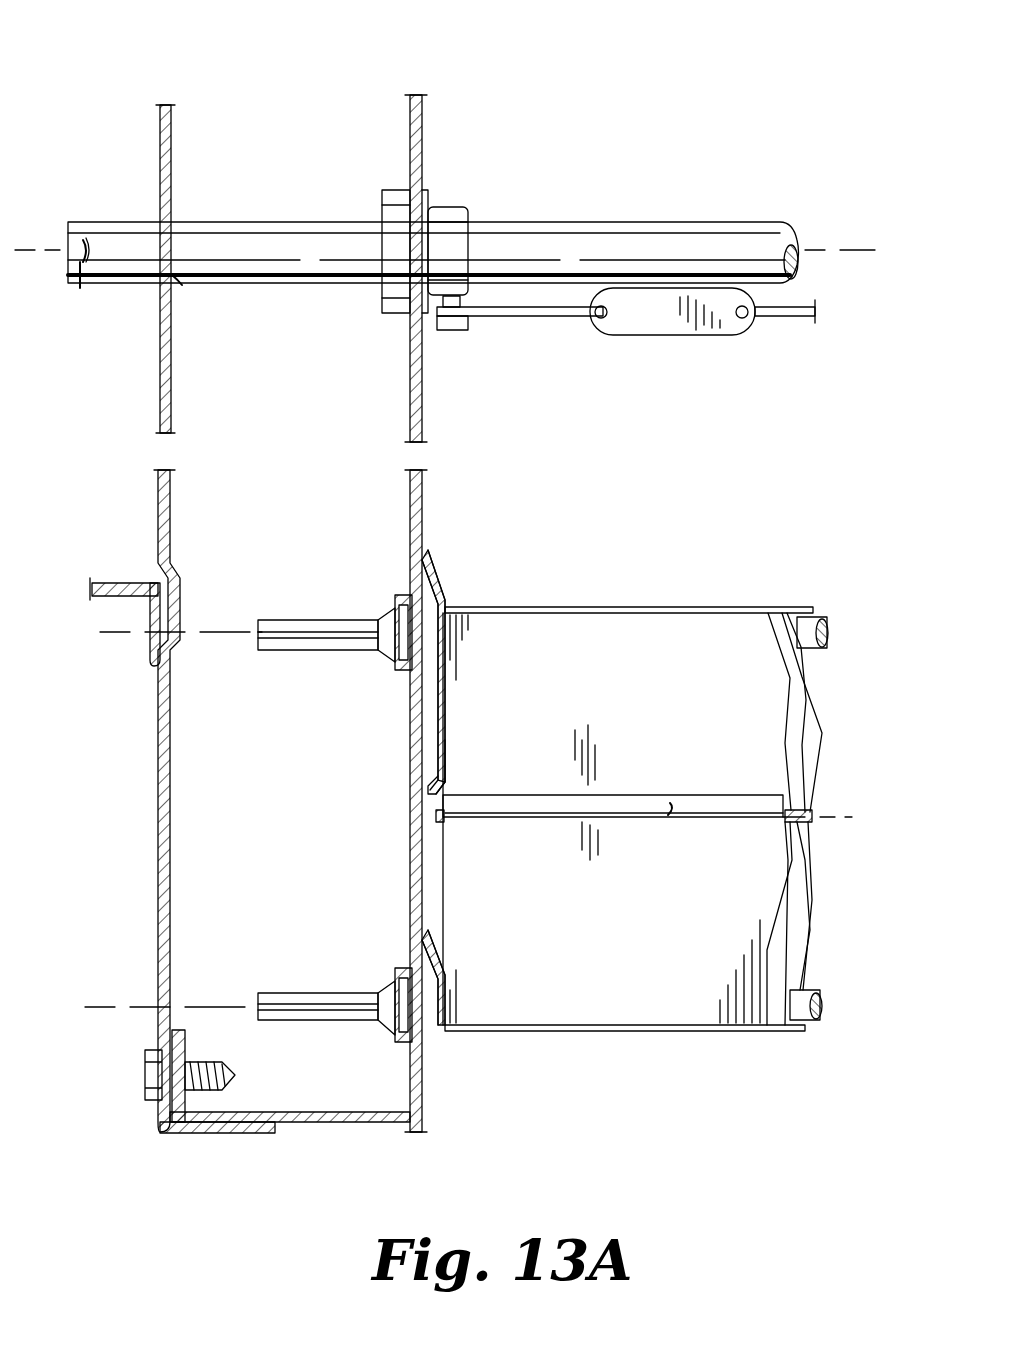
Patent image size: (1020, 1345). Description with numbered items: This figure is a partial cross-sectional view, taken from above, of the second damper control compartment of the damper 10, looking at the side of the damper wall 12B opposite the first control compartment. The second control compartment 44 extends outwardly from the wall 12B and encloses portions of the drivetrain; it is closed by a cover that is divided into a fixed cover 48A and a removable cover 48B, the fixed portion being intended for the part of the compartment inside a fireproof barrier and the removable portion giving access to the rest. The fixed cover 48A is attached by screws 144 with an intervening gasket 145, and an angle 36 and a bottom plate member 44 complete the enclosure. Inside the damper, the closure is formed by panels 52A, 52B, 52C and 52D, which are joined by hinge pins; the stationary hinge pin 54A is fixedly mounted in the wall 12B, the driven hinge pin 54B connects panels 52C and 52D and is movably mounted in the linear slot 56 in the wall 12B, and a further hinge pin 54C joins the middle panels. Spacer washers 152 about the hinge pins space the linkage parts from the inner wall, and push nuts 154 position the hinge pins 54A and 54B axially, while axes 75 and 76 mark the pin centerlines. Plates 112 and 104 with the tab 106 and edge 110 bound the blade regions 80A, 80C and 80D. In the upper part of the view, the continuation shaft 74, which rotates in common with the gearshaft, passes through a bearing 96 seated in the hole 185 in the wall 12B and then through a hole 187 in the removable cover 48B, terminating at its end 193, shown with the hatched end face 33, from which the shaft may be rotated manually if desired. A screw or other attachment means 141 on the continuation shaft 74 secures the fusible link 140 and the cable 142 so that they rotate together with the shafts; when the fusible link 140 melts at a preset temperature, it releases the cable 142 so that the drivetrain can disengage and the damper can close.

The damper 10 is at (285, 95).
The damper wall 12B is at (410, 397).
The hatched end 33 is at (803, 248).
The bracket 36 is at (118, 582).
The second control compartment 44 is at (344, 1112).
The fixed cover 48A is at (158, 720).
The removable cover 48B is at (158, 340).
The panel 52A is at (810, 680).
The panel 52B is at (793, 750).
The panel 52C is at (800, 920).
The panel 52D is at (780, 953).
The stationary hinge pin 54A is at (310, 620).
The driven hinge pin 54B is at (344, 993).
The hinge pin 54C is at (434, 816).
The linear slot 56 is at (408, 688).
The continuation shaft 74 is at (215, 222).
The axis 75 is at (205, 1007).
The axis 76 is at (226, 638).
The chamber 80A is at (654, 970).
The bracket 80C is at (440, 748).
The chamber 80D is at (691, 679).
The bearing 96 is at (452, 206).
The middle plate 104 is at (637, 795).
The tab 106 is at (668, 822).
The plate edge 110 is at (558, 818).
The plate 112 is at (523, 606).
The fusible link 140 is at (692, 336).
The screw or other attachment means 141 is at (451, 332).
The cable 142 is at (527, 316).
The screws 144 is at (228, 1088).
The gasket 145 is at (190, 1050).
The spacer washers 152 is at (426, 598).
The push nuts 154 is at (392, 612).
The hole 185 is at (397, 280).
The hole 187 is at (173, 286).
The end of shaft 193 is at (81, 281).